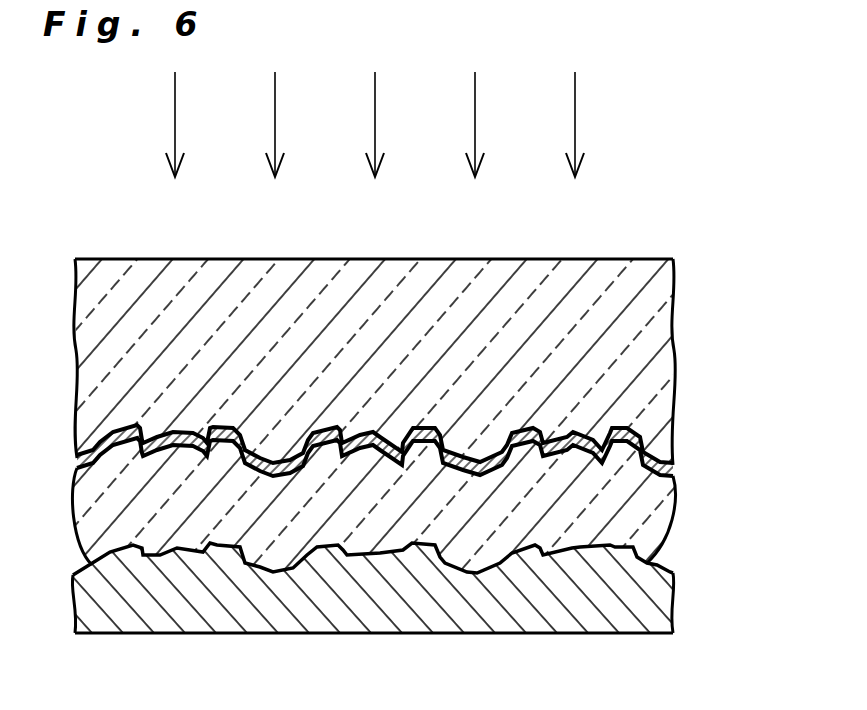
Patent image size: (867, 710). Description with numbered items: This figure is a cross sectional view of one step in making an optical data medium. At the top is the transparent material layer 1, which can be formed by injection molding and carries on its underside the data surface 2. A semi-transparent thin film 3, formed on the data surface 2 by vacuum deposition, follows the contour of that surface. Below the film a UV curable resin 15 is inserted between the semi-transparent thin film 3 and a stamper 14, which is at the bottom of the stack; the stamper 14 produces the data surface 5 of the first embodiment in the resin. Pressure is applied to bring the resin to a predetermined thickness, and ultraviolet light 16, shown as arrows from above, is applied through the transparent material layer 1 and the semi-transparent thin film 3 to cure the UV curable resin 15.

The transparent material layer 1 is at (647, 333).
The data surface 2 is at (645, 405).
The semi-transparent thin film 3 is at (675, 442).
The data surface 5 is at (643, 548).
The stamper 14 is at (419, 582).
The UV curable resin 15 is at (642, 510).
The ultraviolet light 16 is at (575, 115).